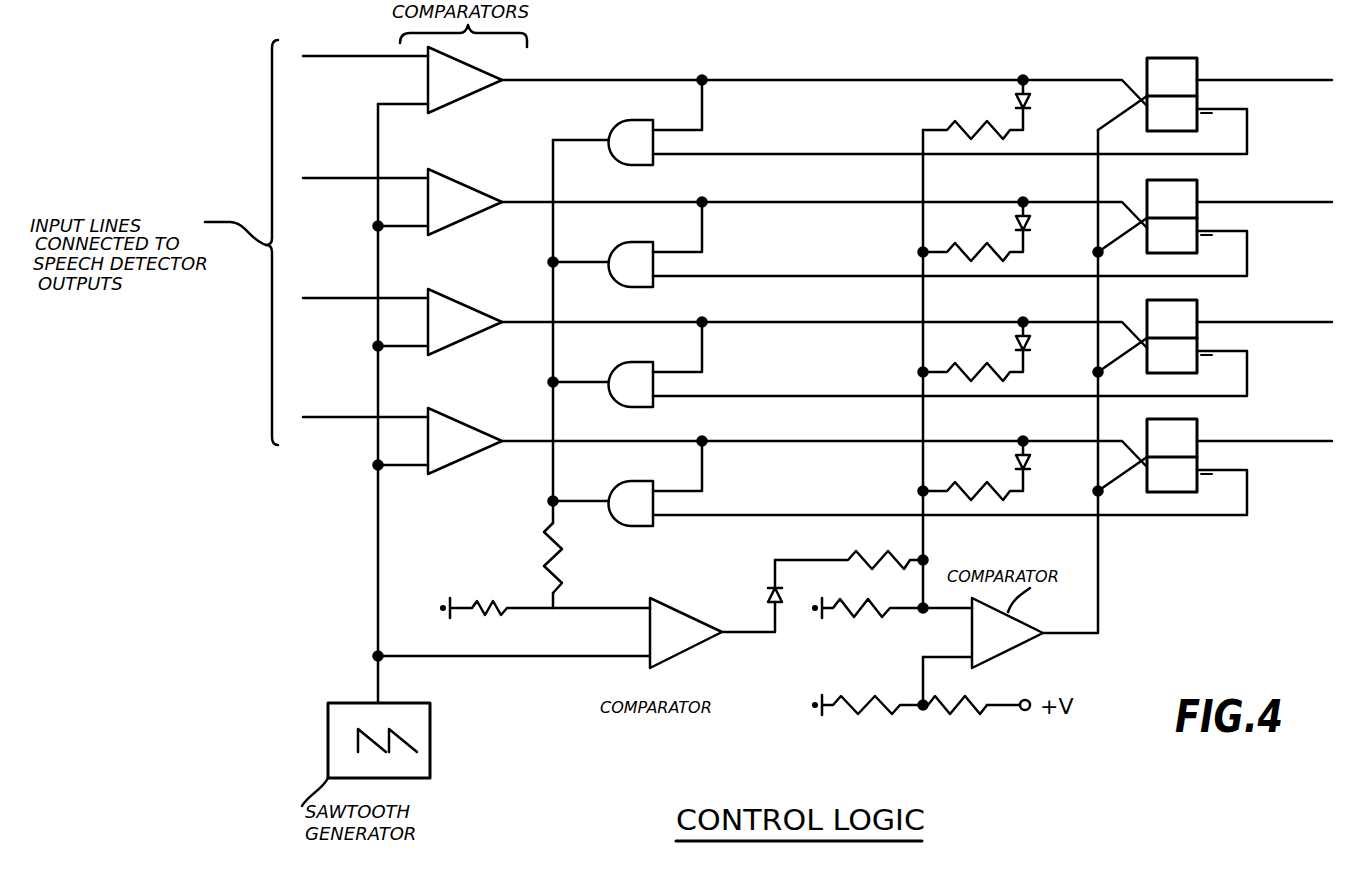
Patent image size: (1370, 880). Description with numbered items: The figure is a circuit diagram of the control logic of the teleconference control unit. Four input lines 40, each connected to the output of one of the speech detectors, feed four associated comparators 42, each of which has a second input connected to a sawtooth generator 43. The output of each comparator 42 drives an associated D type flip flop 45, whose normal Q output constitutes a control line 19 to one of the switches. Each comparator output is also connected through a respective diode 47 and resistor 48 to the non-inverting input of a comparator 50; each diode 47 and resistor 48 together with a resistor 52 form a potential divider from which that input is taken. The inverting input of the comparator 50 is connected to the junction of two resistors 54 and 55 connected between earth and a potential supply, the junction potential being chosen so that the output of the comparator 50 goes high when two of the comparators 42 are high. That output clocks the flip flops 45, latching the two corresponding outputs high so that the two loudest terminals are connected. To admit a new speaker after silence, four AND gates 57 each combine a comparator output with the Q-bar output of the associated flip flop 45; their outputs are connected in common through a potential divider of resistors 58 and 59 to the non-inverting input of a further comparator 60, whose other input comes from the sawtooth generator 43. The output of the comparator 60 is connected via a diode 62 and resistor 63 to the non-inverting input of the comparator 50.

The control line 19 is at (1305, 82).
The input lines 40 is at (335, 56).
The comparator 42 is at (462, 84).
The sawtooth generator 43 is at (430, 730).
The D type flip flop 45 is at (1190, 90).
The diode 47 is at (1031, 100).
The resistor 48 is at (962, 128).
The comparator 50 is at (1012, 640).
The resistor 52 is at (875, 622).
The resistor 54 is at (873, 716).
The resistor 55 is at (972, 714).
The AND gate 57 is at (620, 166).
The resistor 58 is at (559, 560).
The resistor 59 is at (545, 592).
The comparator 60 is at (660, 690).
The diode 62 is at (768, 596).
The resistor 63 is at (860, 555).